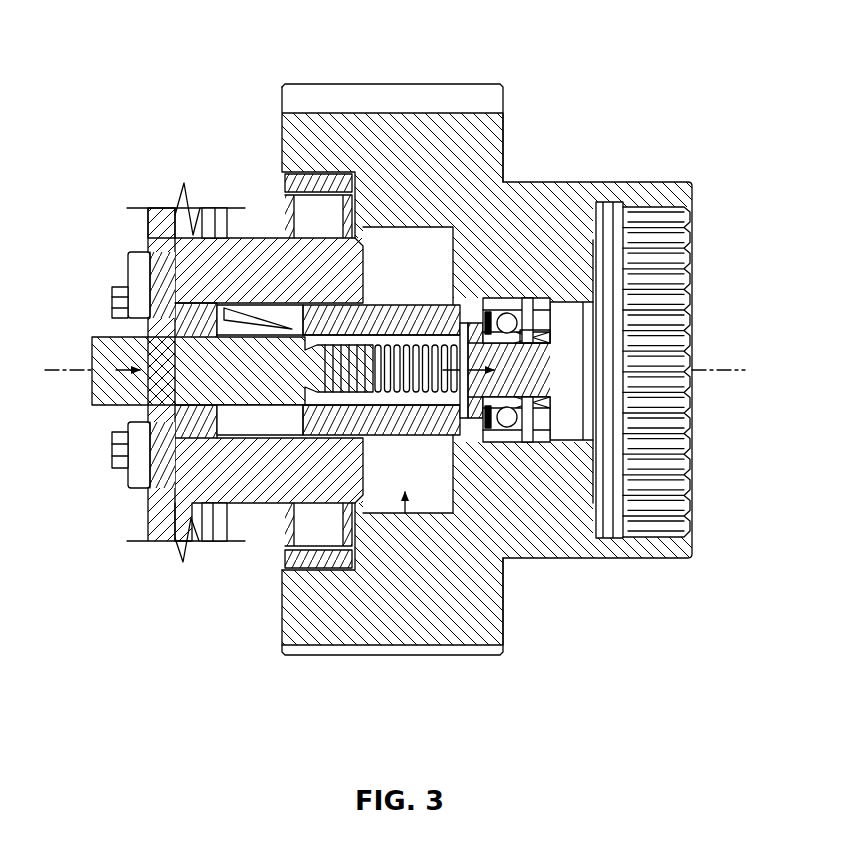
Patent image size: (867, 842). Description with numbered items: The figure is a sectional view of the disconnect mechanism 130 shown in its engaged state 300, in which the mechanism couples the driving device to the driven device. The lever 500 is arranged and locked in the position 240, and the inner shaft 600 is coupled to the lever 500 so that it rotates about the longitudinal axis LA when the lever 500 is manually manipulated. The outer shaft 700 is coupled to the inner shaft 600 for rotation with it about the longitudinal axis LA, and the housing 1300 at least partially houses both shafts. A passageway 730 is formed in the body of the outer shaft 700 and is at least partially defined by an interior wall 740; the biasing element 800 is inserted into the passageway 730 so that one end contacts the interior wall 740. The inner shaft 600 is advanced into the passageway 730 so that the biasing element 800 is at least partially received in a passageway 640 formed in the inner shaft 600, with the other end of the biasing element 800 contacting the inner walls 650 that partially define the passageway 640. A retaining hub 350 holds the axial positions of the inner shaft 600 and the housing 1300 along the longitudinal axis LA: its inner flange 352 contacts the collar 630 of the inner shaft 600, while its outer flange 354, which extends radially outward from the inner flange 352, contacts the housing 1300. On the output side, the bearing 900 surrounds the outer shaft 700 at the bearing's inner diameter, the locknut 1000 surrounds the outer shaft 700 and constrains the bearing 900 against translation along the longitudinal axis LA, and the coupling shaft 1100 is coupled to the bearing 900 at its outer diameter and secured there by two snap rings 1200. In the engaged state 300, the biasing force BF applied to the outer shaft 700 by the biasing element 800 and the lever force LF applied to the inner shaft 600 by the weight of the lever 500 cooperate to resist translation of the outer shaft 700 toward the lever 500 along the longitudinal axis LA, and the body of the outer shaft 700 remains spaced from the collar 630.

The disconnect mechanism 130 is at (641, 90).
The position 240 is at (148, 244).
The engaged state 300 is at (412, 390).
The retaining hub 350 is at (178, 490).
The inner flange 352 is at (203, 250).
The outer flange 354 is at (166, 255).
The lever 500 is at (130, 285).
The inner shaft 600 is at (138, 425).
The collar 630 is at (203, 430).
The passageway 640 is at (300, 382).
The inner walls 650 is at (330, 338).
The outer shaft 700 is at (380, 336).
The passageway 730 is at (397, 400).
The interior wall 740 is at (480, 360).
The biasing element 800 is at (475, 430).
The bearing 900 is at (538, 437).
The locknut 1000 is at (525, 336).
The coupling shaft 1100 is at (560, 420).
The snap ring 1200 is at (540, 316).
The housing 1300 is at (300, 257).
The longitudinal axis LA is at (396, 409).
The lever force LF is at (108, 372).
The biasing force BF is at (510, 440).